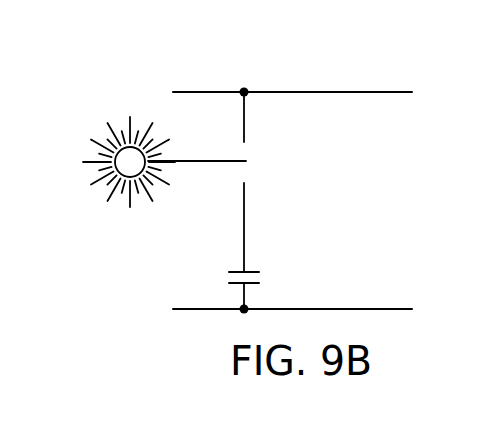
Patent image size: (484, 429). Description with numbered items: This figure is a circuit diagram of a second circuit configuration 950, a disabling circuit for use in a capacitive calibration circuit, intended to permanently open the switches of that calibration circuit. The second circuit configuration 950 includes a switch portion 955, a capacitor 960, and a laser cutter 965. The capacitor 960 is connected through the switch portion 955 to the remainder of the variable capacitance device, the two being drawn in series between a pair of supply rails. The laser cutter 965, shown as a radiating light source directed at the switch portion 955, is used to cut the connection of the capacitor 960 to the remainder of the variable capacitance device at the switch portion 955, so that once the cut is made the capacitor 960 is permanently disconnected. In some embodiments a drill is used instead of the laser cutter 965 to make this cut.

The second circuit configuration 950 is at (125, 48).
The switch portion 955 is at (240, 145).
The capacitor 960 is at (237, 273).
The laser cutter 965 is at (107, 140).